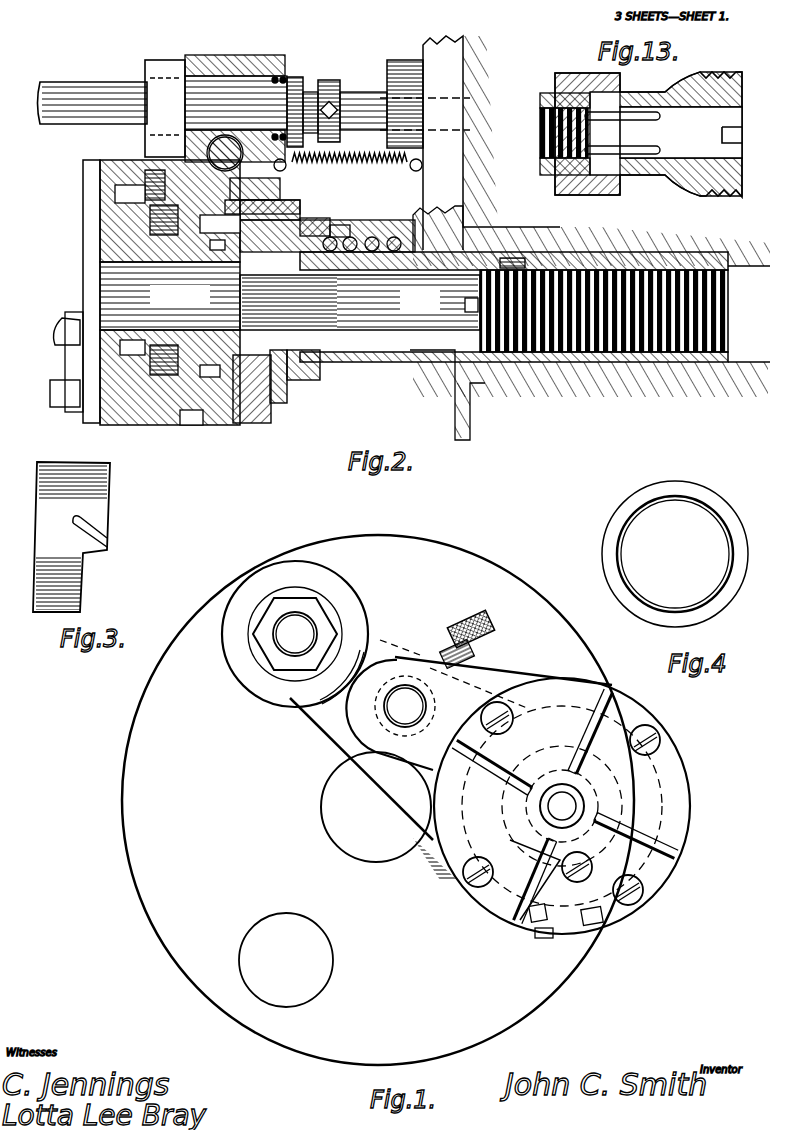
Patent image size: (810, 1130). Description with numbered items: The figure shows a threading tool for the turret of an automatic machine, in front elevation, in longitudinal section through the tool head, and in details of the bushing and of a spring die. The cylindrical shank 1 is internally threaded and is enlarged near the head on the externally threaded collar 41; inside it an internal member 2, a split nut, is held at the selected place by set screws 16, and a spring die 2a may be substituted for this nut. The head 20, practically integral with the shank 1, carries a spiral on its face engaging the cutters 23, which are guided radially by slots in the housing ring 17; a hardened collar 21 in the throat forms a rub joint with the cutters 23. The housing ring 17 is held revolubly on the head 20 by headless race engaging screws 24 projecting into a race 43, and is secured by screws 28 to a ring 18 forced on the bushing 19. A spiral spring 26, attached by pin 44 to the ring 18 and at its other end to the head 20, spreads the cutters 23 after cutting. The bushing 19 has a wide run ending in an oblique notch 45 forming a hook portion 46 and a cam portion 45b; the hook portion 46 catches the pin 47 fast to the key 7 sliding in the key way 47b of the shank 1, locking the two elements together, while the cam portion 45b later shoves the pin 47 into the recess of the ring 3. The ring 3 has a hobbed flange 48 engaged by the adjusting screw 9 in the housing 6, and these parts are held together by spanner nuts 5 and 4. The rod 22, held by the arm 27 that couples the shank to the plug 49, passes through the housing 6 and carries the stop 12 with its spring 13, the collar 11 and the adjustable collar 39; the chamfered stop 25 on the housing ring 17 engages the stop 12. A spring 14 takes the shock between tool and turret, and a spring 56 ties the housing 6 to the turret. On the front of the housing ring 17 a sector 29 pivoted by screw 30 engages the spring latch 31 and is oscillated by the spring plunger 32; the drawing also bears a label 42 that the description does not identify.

In FIG. 2, the shank 1 is at (660, 258).
In FIG. 2, the internal member 2 is at (245, 150).
In FIG. 13, the spring die 2a is at (641, 134).
In FIG. 2, the ring 3 is at (315, 216).
In FIG. 2, the spanner nut 4 is at (320, 378).
In FIG. 2, the spanner nut 5 is at (287, 396).
In FIG. 2, the housing 6 is at (266, 187).
In FIG. 1, the housing 6 is at (495, 666).
In FIG. 2, the key 7 is at (340, 216).
In FIG. 1, the adjusting screw 9 is at (468, 618).
In FIG. 2, the collar 11 is at (311, 92).
In FIG. 2, the stop 12 is at (165, 108).
In FIG. 1, the stop 12 is at (407, 684).
In FIG. 2, the spring 13 is at (294, 77).
In FIG. 2, the spring 14 is at (380, 240).
In FIG. 2, the set screws 16 is at (505, 258).
In FIG. 2, the housing ring 17 is at (152, 426).
In FIG. 2, the ring 18 is at (192, 422).
In FIG. 2, the bushing 19 is at (262, 418).
In FIG. 3, the bushing 19 is at (67, 510).
In FIG. 2, the head 20 is at (100, 418).
In FIG. 2, the hardened collar 21 is at (130, 262).
In FIG. 2, the rod 22 is at (92, 124).
In FIG. 2, the cutters 23 is at (83, 185).
In FIG. 1, the cutters 23 is at (590, 768).
In FIG. 2, the race engaging screws 24 is at (122, 168).
In FIG. 1, the stop 25 is at (545, 940).
In FIG. 2, the spiral spring 26 is at (120, 246).
In FIG. 1, the arm 27 is at (370, 634).
In FIG. 1, the screws 28 is at (660, 740).
In FIG. 2, the sector 29 is at (70, 412).
In FIG. 1, the sector 29 is at (567, 893).
In FIG. 1, the screw 30 is at (600, 840).
In FIG. 2, the spring latch 31 is at (50, 392).
In FIG. 1, the spring latch 31 is at (596, 926).
In FIG. 2, the spring plunger 32 is at (56, 362).
In FIG. 1, the spring plunger 32 is at (533, 921).
In FIG. 2, the adjustable collar 39 is at (334, 82).
In FIG. 2, the collar 41 is at (362, 235).
In FIG. 1, the chuck disc 42 is at (562, 806).
In FIG. 2, the race 43 is at (105, 205).
In FIG. 2, the pin 44 is at (110, 228).
In FIG. 3, the notch 45 is at (80, 537).
In FIG. 3, the cam portion 45b is at (78, 545).
In FIG. 3, the hook portion 46 is at (100, 533).
In FIG. 2, the pin 47 is at (300, 203).
In FIG. 2, the key way 47b is at (170, 296).
In FIG. 2, the flange 48 is at (225, 425).
In FIG. 1, the plug 49 is at (285, 598).
In FIG. 2, the spring 56 is at (376, 170).